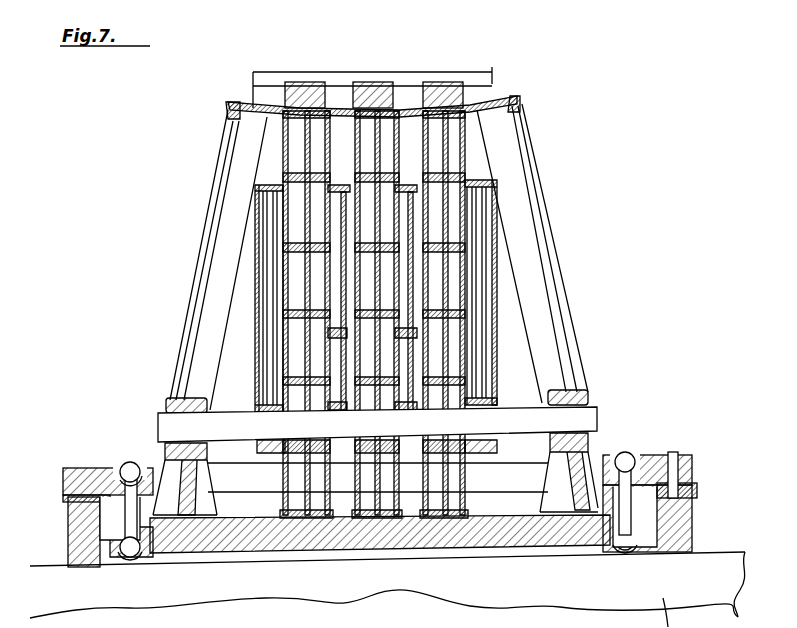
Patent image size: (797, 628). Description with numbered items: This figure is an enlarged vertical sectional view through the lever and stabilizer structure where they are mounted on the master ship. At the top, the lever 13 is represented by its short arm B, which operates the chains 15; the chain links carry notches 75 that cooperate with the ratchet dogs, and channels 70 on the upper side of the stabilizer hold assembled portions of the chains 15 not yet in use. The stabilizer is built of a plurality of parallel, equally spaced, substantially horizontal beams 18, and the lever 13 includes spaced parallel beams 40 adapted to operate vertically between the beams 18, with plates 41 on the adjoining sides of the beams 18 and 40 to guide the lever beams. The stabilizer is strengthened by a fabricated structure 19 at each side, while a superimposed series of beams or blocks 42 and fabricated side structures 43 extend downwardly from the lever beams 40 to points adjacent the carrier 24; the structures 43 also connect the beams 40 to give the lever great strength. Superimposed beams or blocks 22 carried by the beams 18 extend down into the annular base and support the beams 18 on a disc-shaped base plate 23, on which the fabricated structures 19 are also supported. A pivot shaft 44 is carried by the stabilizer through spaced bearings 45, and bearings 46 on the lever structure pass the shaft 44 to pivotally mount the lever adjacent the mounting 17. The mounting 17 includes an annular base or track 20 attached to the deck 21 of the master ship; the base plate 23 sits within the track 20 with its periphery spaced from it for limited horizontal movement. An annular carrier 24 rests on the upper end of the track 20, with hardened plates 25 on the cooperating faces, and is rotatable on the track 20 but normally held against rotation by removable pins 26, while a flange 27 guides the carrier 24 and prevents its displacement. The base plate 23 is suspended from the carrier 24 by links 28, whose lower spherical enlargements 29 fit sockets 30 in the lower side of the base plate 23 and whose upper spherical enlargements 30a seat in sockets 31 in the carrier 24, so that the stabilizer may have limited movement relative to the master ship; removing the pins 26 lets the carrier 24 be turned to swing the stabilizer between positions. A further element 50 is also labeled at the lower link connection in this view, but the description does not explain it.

The lever 13 is at (480, 67).
The short arm B is at (253, 76).
The chains 15 is at (395, 70).
The notches 75 is at (286, 82).
The channels 70 is at (470, 98).
The fabricated structure 19 is at (212, 232).
The beams 18 is at (302, 151).
The beams 40 is at (341, 93).
The plates 41 is at (422, 189).
The beams or blocks 42 is at (412, 357).
The fabricated side structures 43 is at (262, 345).
The beams or blocks 22 is at (456, 273).
The bearings 46 is at (478, 409).
The pivot shaft 44 is at (377, 424).
The bearings 45 is at (587, 397).
The base plate 23 is at (490, 535).
The carrier 24 is at (82, 468).
The hardened plates 25 is at (68, 499).
The links 28 is at (125, 514).
The spherical enlargements 30a is at (124, 466).
The sockets 31 is at (133, 462).
The spherical enlargements 29 is at (127, 553).
The sockets 30 is at (137, 553).
The removable pins 26 is at (692, 456).
The annular base or track 20 is at (680, 527).
The flange 27 is at (698, 492).
The mounting 17 is at (634, 456).
The right lower socket 50 is at (620, 550).
The deck 21 is at (726, 552).